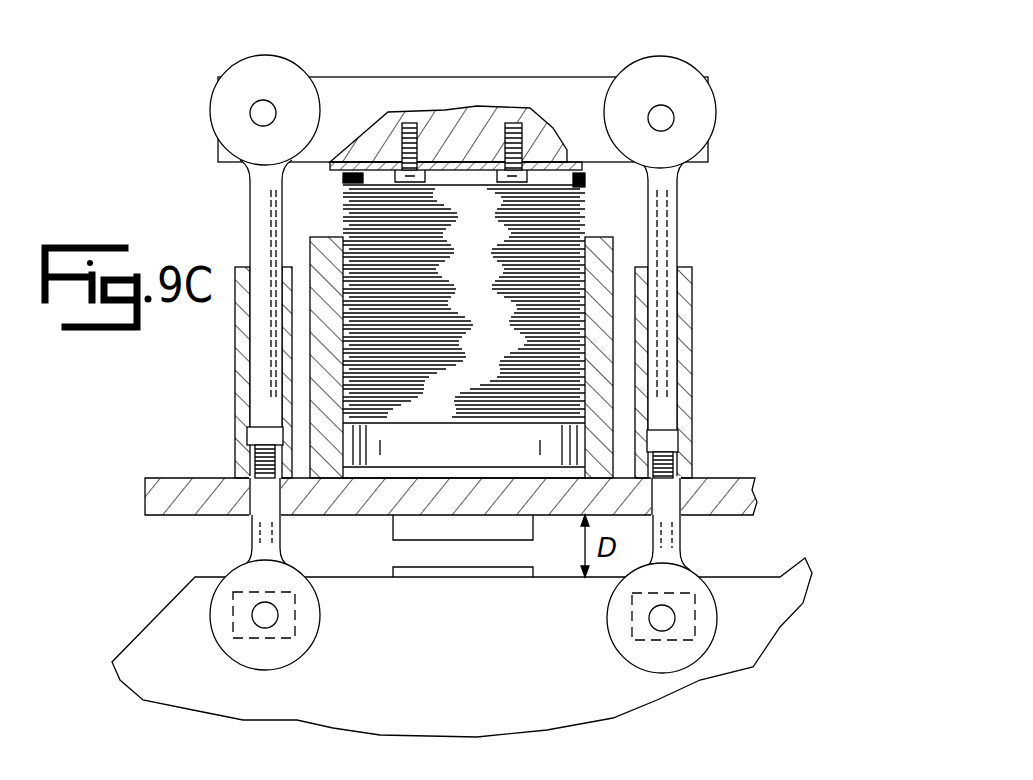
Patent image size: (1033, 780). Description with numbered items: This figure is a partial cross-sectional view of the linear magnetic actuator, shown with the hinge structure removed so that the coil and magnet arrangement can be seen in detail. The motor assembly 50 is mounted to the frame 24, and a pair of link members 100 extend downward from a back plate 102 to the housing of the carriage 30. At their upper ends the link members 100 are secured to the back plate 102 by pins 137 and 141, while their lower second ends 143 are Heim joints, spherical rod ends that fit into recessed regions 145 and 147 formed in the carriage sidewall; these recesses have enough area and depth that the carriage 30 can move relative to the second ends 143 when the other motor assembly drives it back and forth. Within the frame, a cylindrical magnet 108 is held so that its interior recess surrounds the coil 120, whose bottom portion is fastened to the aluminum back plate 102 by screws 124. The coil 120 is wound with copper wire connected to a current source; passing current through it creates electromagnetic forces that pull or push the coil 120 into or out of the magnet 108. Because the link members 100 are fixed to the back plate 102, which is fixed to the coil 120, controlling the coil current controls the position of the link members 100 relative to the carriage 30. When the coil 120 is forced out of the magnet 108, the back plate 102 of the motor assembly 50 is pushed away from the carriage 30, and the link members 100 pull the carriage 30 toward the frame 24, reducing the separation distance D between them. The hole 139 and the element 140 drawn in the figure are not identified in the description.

The frame 24 is at (748, 523).
The carriage 30 is at (740, 593).
The motor assembly 50 is at (506, 40).
The link members 100 is at (667, 237).
The back plate 102 is at (380, 90).
The magnet 108 is at (342, 252).
The coil 120 is at (622, 201).
The screws 124 is at (517, 135).
The pin 137 is at (293, 54).
The bolt head hole 139 is at (280, 80).
The spacer block 140 is at (433, 578).
The pin 141 is at (672, 110).
The second end 143 is at (218, 650).
The recessed region 145 is at (297, 640).
The recessed region 147 is at (637, 640).